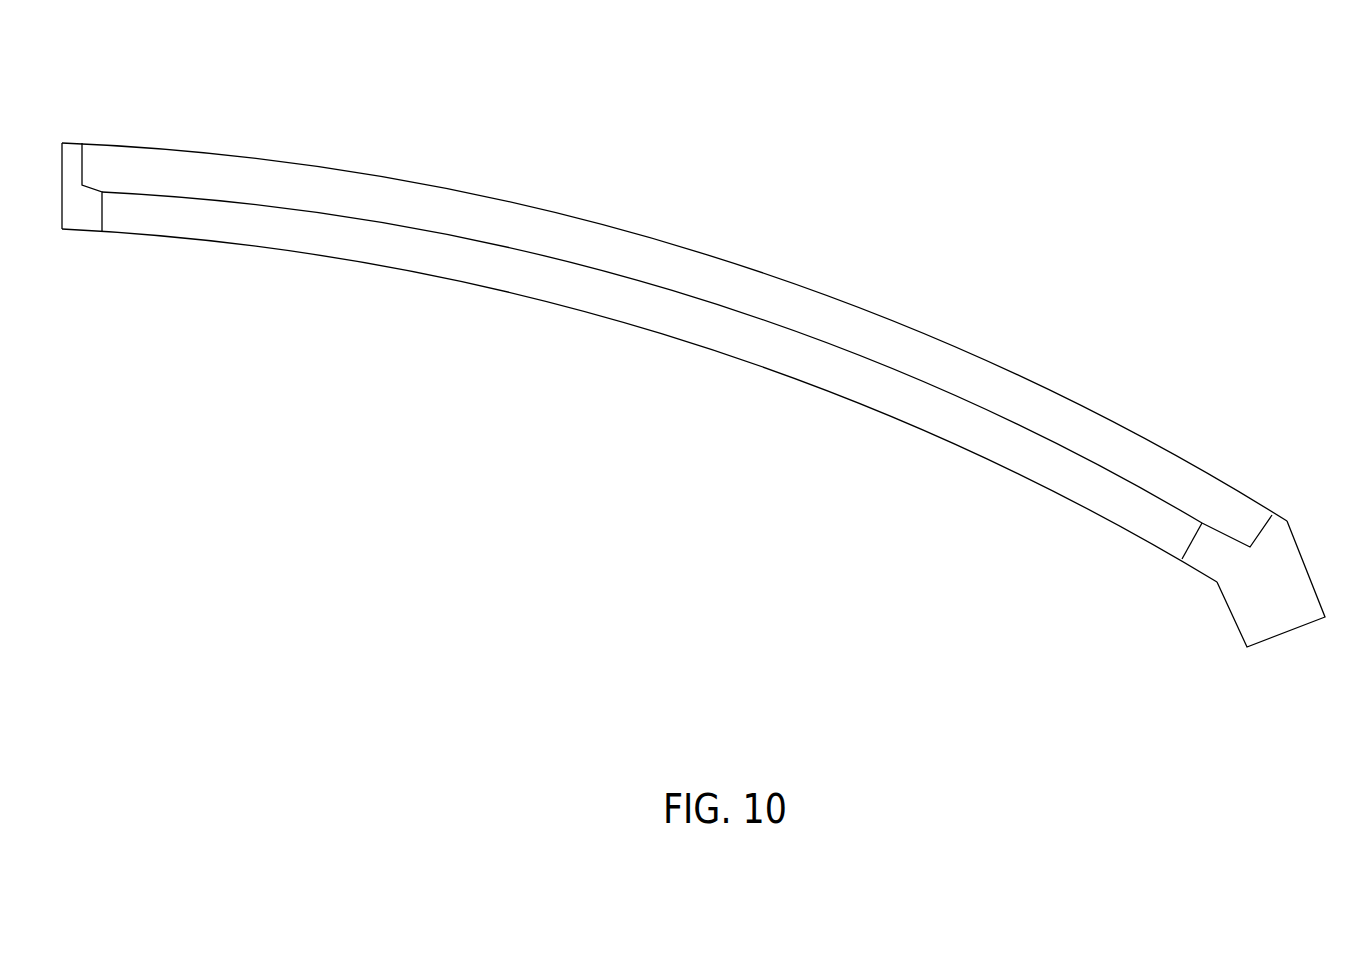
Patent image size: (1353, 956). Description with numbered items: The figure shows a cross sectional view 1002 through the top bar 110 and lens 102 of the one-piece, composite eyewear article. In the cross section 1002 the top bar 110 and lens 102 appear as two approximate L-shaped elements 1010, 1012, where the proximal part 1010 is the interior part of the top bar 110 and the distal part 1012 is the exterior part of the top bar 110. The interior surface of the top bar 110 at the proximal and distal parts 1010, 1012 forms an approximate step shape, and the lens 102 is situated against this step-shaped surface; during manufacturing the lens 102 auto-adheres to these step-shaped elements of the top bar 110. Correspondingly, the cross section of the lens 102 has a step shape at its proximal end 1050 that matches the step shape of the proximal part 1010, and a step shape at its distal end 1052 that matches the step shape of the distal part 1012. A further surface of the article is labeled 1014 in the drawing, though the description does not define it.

The cross sectional view 1002 is at (479, 92).
The proximal part of top bar 1010 is at (77, 143).
The distal part of top bar 1012 is at (1288, 521).
The proximal end of lens 1050 is at (90, 173).
The distal end of lens 1052 is at (1243, 522).
The outer surface 1014 is at (747, 272).
The lens 102 is at (860, 318).
The top bar 110 is at (545, 301).